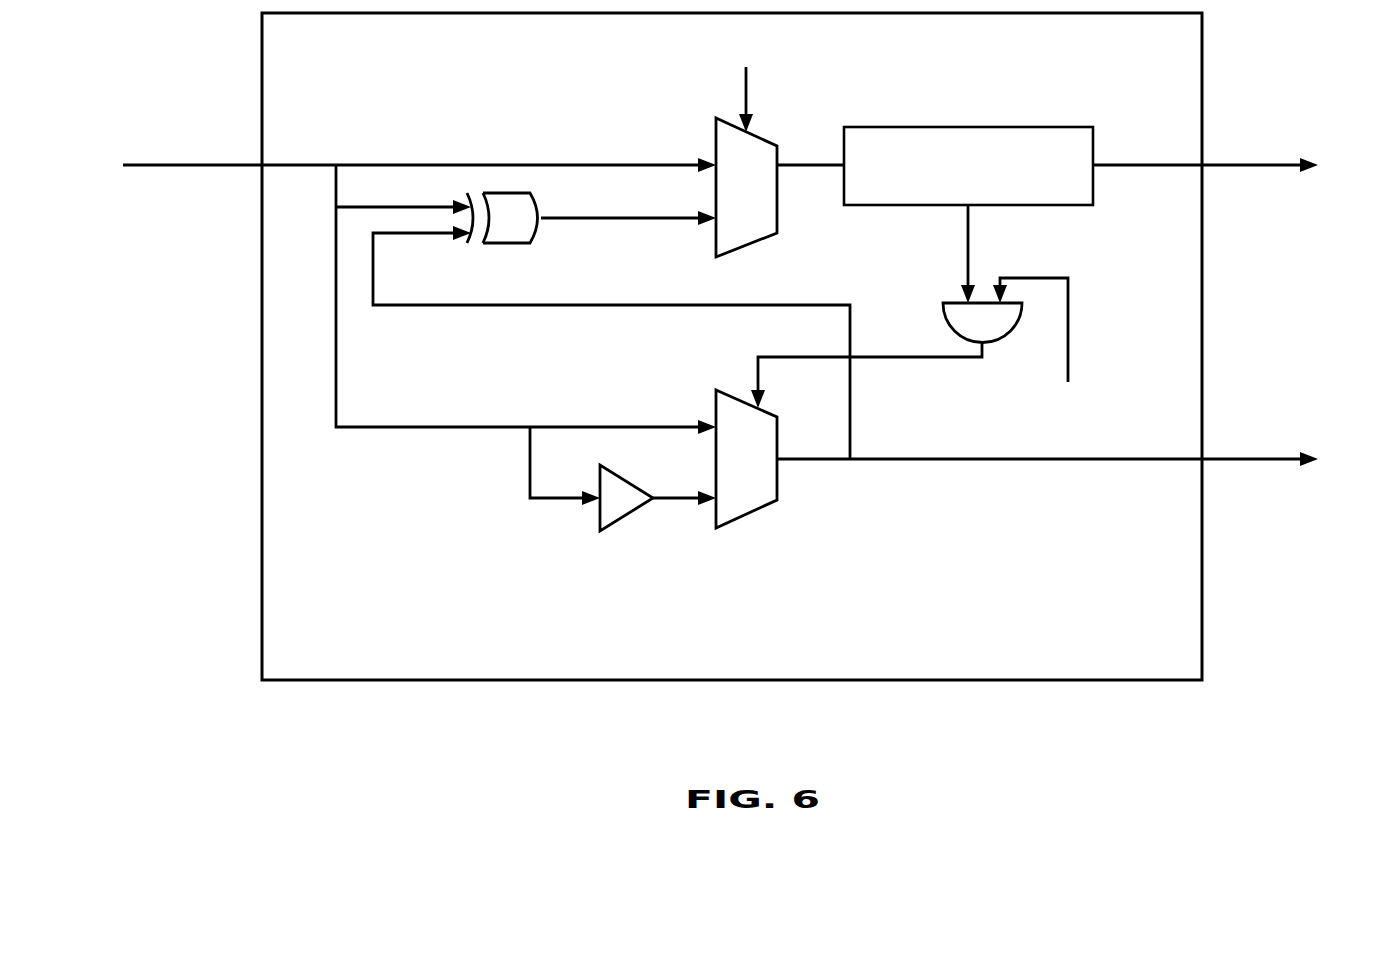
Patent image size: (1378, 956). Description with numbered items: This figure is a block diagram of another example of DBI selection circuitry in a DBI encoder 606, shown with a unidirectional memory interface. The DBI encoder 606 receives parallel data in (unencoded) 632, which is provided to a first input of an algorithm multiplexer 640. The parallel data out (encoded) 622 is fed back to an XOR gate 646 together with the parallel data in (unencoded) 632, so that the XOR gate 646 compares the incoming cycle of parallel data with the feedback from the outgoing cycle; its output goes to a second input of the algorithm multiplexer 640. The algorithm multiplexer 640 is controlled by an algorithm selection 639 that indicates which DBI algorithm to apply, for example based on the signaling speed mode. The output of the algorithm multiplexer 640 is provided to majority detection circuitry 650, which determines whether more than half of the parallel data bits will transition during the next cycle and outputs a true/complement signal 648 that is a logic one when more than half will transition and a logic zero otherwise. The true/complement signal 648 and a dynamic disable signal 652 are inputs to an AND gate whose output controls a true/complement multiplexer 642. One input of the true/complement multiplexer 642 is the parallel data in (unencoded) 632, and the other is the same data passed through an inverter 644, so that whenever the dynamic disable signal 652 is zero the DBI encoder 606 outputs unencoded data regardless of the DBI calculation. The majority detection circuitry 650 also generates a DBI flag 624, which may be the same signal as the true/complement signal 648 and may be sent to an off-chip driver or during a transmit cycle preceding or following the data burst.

The DBI encoder 606 is at (732, 346).
The parallel data in (unencoded) 632 is at (155, 163).
The DBI flag 624 is at (1272, 163).
The parallel data out (encoded) 622 is at (1284, 457).
The algorithm selection 639 is at (746, 97).
The algorithm multiplexer 640 is at (777, 218).
The true/complement multiplexer 642 is at (740, 517).
The inverter 644 is at (612, 532).
The XOR gate 646 is at (525, 243).
The true/complement signal 648 is at (1008, 247).
The majority detection circuitry 650 is at (968, 166).
The dynamic disable signal 652 is at (1068, 335).